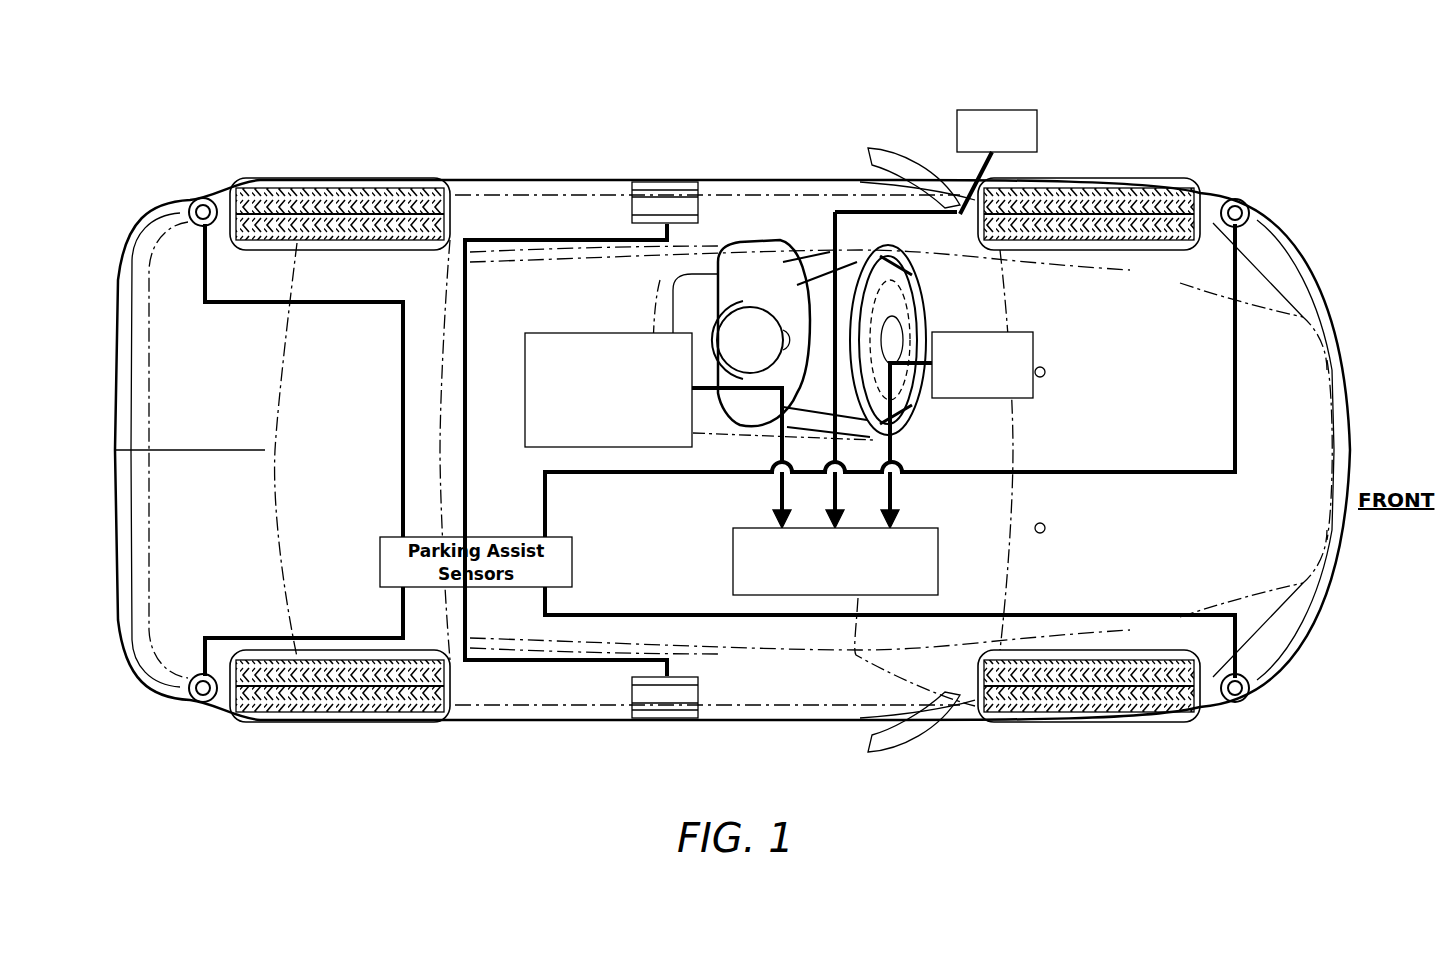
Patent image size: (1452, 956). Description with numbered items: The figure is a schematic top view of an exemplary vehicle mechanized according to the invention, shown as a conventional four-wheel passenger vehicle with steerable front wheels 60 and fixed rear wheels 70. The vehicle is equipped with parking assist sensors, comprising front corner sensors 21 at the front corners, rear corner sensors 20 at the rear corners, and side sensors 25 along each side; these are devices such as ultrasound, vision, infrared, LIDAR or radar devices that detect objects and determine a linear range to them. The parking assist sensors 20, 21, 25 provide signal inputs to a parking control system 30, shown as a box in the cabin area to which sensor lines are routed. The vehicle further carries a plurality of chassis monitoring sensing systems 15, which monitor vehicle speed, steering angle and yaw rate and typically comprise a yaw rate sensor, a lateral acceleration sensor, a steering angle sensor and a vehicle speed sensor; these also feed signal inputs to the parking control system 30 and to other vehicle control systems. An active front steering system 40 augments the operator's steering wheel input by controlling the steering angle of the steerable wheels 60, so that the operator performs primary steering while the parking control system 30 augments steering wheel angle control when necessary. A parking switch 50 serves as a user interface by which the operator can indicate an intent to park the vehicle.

The chassis monitoring sensing systems 15 is at (525, 390).
The rear corner sensors 20 is at (192, 198).
The front corner sensors 21 is at (1238, 198).
The side sensors 25 is at (667, 182).
The parking control system 30 is at (835, 596).
The active front steering system 40 is at (1027, 388).
The parking switch 50 is at (988, 110).
The steerable front wheels 60 is at (1142, 188).
The fixed rear wheels 70 is at (265, 186).